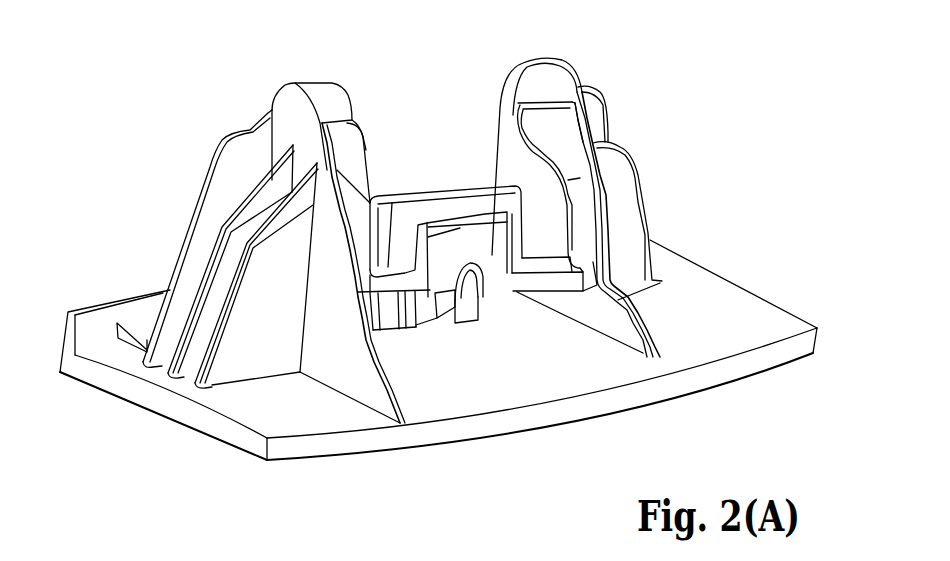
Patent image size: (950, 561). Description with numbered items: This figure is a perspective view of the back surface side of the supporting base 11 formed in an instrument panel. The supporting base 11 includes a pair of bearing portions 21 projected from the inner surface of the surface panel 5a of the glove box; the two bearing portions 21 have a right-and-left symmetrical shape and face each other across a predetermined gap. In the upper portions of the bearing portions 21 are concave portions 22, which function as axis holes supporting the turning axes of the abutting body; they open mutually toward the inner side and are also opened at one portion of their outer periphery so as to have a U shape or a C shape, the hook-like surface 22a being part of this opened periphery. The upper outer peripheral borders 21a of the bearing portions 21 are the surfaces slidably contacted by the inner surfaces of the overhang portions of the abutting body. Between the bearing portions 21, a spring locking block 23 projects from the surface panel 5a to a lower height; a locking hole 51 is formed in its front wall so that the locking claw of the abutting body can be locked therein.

The surface panel 5a is at (633, 400).
The supporting base 11 is at (463, 72).
The bearing portion 21 is at (288, 108).
The outer peripheral border 21a is at (315, 98).
The concave portion 22 is at (633, 158).
The hook surface 22a is at (352, 132).
The spring locking block 23 is at (438, 182).
The locking hole 51 is at (503, 250).